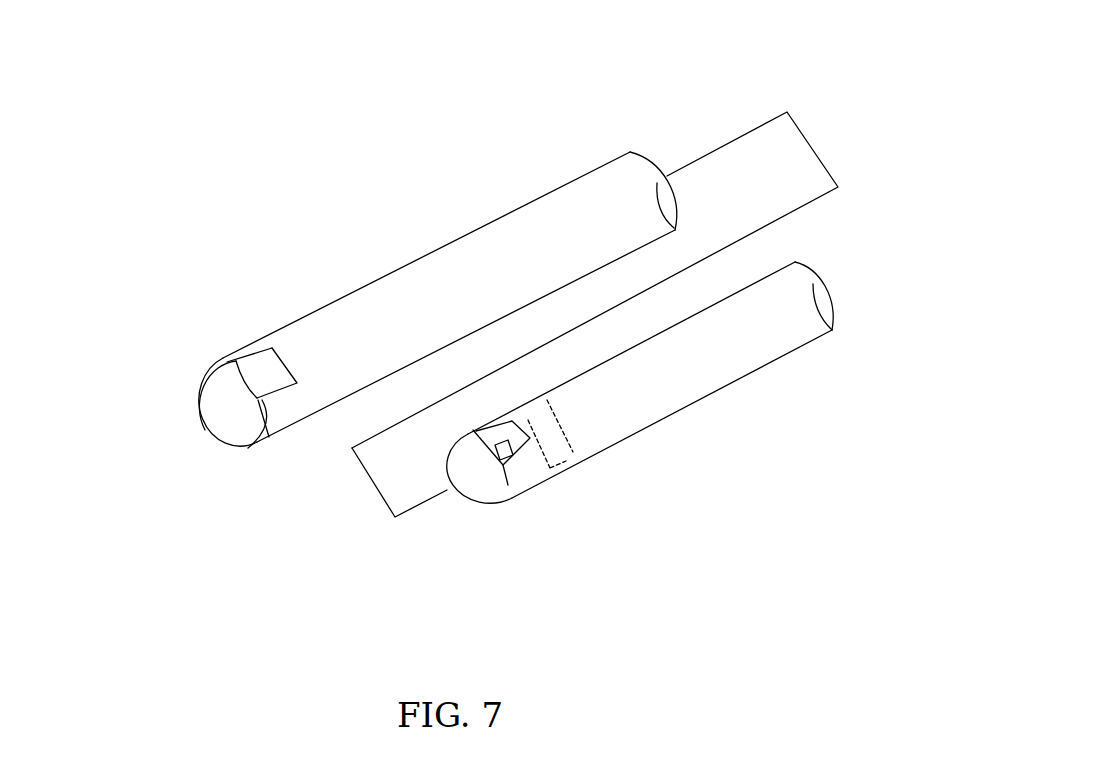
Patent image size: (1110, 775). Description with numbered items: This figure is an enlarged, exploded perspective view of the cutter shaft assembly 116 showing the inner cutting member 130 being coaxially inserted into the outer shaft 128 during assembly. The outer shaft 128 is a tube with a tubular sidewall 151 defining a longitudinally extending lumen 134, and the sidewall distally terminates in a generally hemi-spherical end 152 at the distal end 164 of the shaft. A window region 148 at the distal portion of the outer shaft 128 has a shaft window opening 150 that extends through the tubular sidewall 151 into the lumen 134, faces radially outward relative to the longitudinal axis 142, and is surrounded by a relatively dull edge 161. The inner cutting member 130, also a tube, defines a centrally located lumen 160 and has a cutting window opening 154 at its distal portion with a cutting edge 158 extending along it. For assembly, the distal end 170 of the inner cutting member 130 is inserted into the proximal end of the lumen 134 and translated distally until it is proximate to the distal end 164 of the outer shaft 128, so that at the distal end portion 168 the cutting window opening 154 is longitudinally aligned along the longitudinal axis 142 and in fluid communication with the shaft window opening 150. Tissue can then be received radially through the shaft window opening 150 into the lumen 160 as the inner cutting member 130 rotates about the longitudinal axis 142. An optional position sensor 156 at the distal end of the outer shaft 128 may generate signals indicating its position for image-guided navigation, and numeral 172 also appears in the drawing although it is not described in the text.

The cutter shaft assembly 116 is at (258, 186).
The outer shaft 128 is at (566, 184).
The inner cutting member 130 is at (777, 356).
The lumen 134 is at (657, 152).
The longitudinal axis 142 is at (760, 124).
The window region 148 is at (258, 357).
The shaft window opening 150 is at (273, 374).
The tubular sidewall 151 is at (350, 310).
The hemi-spherical end 152 is at (212, 409).
The cutting window opening 154 is at (523, 463).
The position sensor 156 is at (576, 437).
The cutting edge 158 is at (454, 446).
The lumen 160 is at (837, 283).
The dull edge 161 is at (238, 448).
The distal end 164 is at (209, 440).
The distal end portion 168 is at (291, 452).
The distal end 170 is at (458, 503).
The inner wall 172 is at (471, 508).